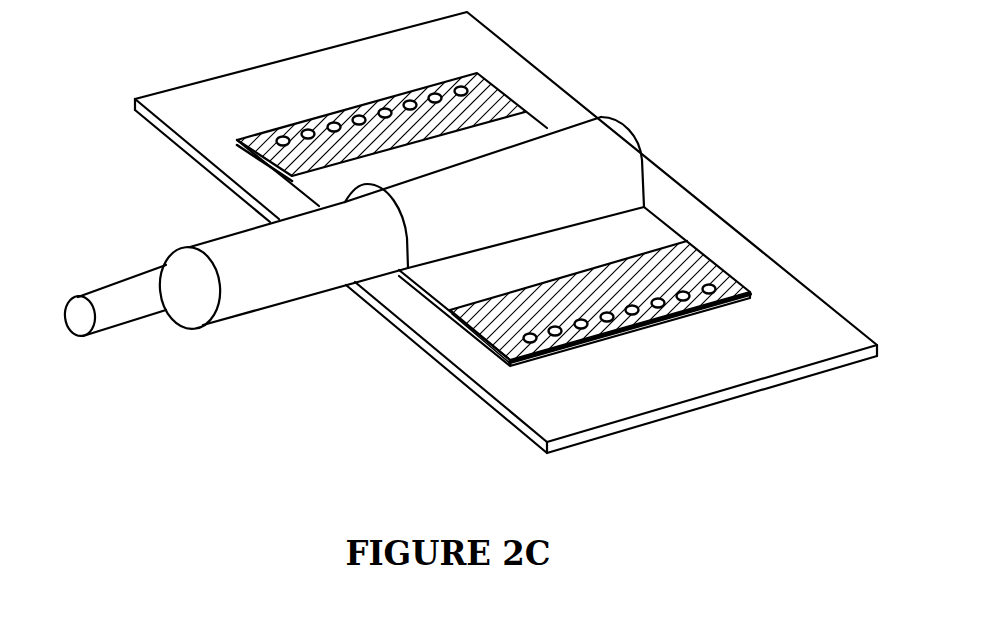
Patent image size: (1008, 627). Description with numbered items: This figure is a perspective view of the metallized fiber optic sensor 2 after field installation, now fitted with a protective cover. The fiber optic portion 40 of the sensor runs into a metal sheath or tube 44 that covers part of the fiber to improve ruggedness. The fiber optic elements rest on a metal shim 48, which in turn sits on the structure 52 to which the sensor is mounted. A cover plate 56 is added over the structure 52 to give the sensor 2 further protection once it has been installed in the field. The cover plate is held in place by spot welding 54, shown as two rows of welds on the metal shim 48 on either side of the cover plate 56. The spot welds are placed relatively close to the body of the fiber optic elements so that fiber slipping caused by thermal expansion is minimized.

The fiber optic sensor 2 is at (604, 44).
The fiber optic portion 40 is at (100, 285).
The metal sheath or tube 44 is at (282, 262).
The metal shim 48 is at (717, 268).
The structure 52 is at (797, 312).
The spot welding 54 is at (463, 90).
The cover plate 56 is at (667, 200).